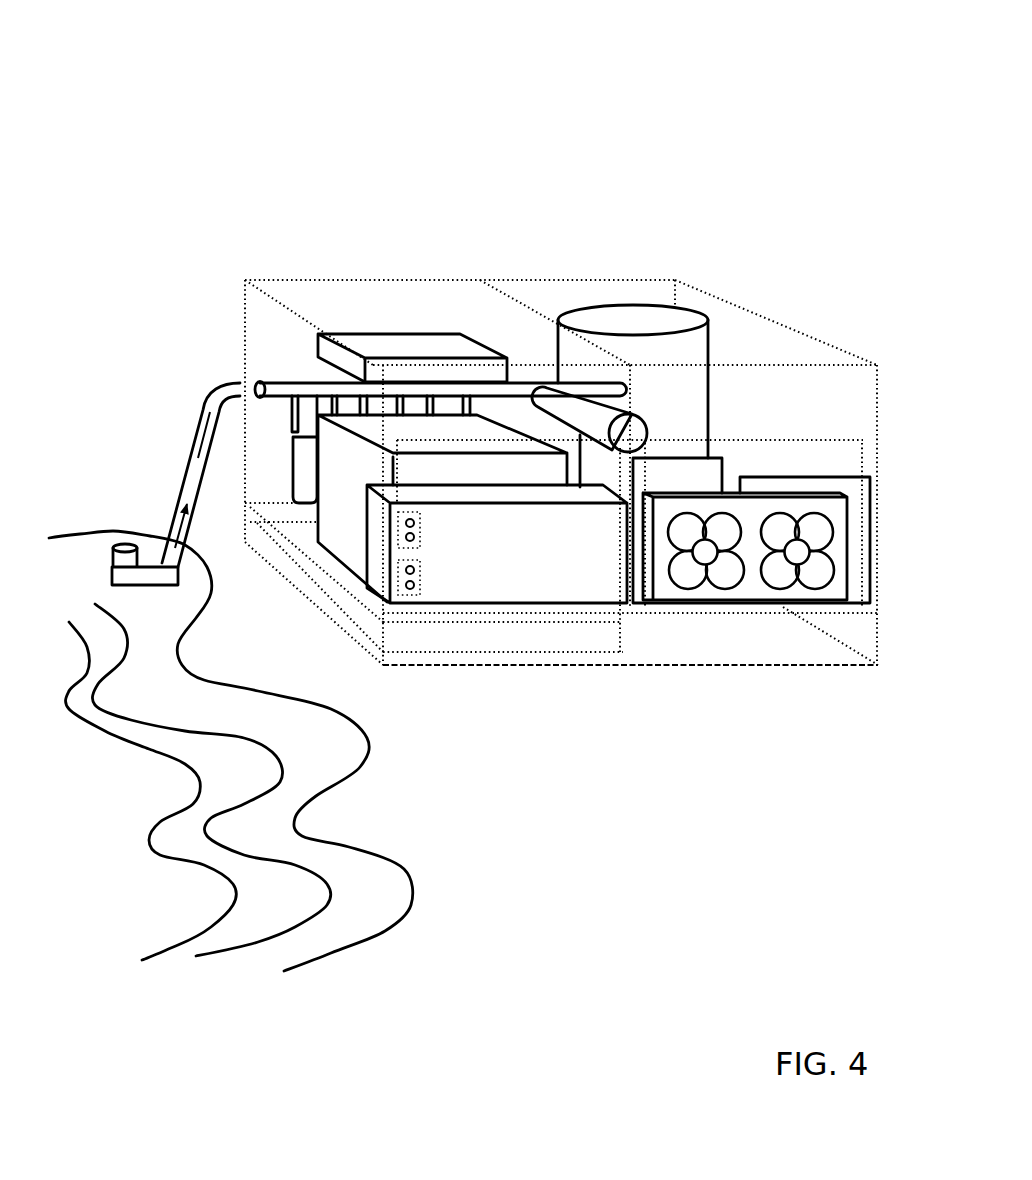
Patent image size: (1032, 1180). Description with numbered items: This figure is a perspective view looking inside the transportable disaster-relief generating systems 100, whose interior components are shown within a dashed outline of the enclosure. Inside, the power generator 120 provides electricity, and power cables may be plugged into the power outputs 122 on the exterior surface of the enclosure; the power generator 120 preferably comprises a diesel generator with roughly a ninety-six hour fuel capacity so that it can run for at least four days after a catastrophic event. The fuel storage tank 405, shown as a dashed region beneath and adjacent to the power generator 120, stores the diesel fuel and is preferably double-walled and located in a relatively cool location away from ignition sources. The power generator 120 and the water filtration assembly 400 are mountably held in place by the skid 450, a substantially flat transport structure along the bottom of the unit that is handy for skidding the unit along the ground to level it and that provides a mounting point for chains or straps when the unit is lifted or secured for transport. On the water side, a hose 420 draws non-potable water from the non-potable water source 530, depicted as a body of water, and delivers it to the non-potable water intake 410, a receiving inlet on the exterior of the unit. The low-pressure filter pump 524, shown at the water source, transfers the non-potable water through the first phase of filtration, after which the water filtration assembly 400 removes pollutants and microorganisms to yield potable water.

The transportable disaster-relief generating systems 100 is at (636, 90).
The water filtration assembly 400 is at (302, 446).
The fuel storage tank 405 is at (511, 645).
The non-potable water intake 410 is at (266, 370).
The hose 420 is at (192, 400).
The skid 450 is at (719, 646).
The power generator 120 is at (358, 556).
The power outputs 122 is at (408, 586).
The low-pressure filter pump 524 is at (111, 545).
The non-potable water source 530 is at (162, 701).